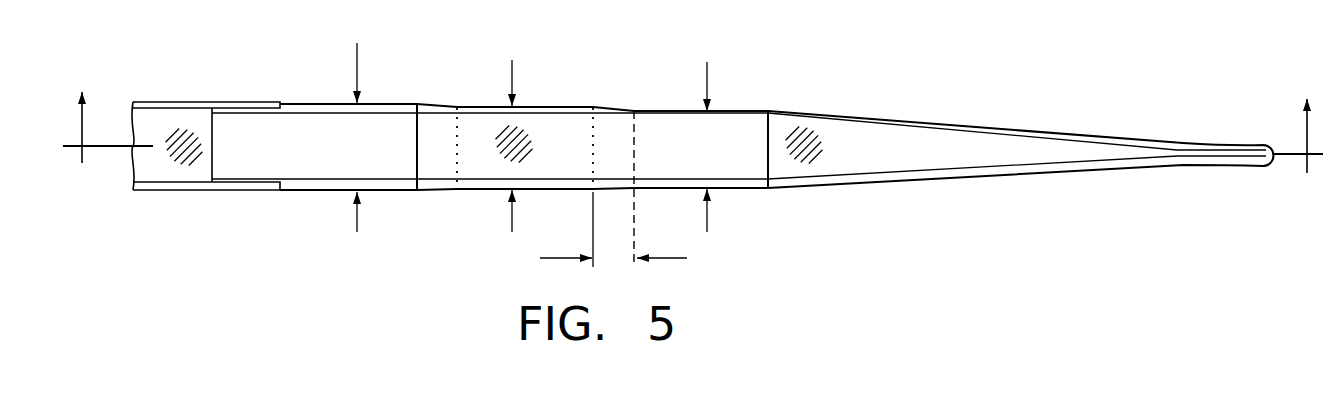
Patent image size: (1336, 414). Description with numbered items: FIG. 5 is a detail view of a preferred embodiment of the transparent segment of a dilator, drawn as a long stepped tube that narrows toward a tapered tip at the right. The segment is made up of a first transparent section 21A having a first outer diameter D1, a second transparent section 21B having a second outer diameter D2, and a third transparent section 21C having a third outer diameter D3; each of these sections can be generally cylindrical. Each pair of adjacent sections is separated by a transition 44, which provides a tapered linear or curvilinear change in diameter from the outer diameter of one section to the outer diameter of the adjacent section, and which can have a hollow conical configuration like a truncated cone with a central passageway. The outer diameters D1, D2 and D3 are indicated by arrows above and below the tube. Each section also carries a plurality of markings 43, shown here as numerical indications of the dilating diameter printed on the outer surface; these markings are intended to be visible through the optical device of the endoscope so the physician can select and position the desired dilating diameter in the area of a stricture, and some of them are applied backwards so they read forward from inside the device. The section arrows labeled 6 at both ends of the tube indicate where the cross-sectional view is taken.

The first transparent section 21A is at (728, 196).
The second transparent section 21B is at (496, 196).
The third transparent section 21C is at (338, 196).
The plurality of markings 43 is at (402, 172).
The transition 44 is at (672, 262).
The first outer diameter D1 is at (707, 73).
The second outer diameter D2 is at (512, 70).
The third outer diameter D3 is at (357, 65).
The section line 6- 6 is at (693, 111).